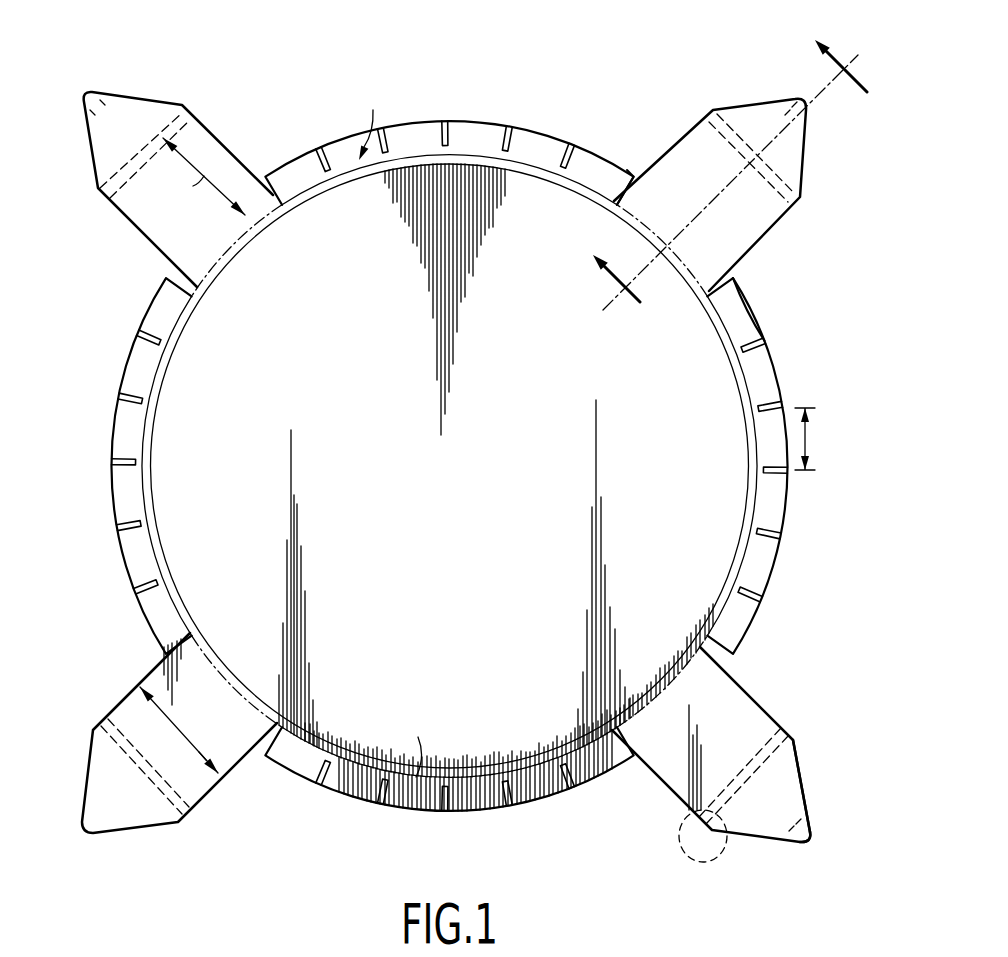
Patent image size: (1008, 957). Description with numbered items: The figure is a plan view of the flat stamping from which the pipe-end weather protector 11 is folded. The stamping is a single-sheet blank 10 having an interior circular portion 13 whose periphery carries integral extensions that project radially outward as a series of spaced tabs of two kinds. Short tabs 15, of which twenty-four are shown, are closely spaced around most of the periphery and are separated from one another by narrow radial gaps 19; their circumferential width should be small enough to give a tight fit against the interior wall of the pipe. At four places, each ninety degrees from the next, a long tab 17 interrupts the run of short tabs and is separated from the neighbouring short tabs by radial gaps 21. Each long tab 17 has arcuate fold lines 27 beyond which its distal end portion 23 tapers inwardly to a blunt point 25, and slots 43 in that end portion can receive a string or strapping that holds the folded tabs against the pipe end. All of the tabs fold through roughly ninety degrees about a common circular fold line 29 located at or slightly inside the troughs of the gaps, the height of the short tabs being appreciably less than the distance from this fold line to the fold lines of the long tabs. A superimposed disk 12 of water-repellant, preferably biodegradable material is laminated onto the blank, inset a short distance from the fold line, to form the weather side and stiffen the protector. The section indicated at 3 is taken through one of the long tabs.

The blank 10 is at (547, 800).
The weather protector 11 is at (850, 382).
The superimposed disk 12 is at (412, 777).
The interior circular portion 13 is at (668, 378).
The short tabs 15 is at (763, 567).
The long tab 17 is at (752, 222).
The radial gaps 19 is at (745, 348).
The radial gaps 21 is at (624, 181).
The distal end portion 23 is at (803, 768).
The blunt point 25 is at (813, 843).
The arcuate fold lines 27 is at (690, 846).
The circular fold line 29 is at (481, 140).
The slots 43 is at (87, 790).
The section line 3- 3 is at (741, 190).